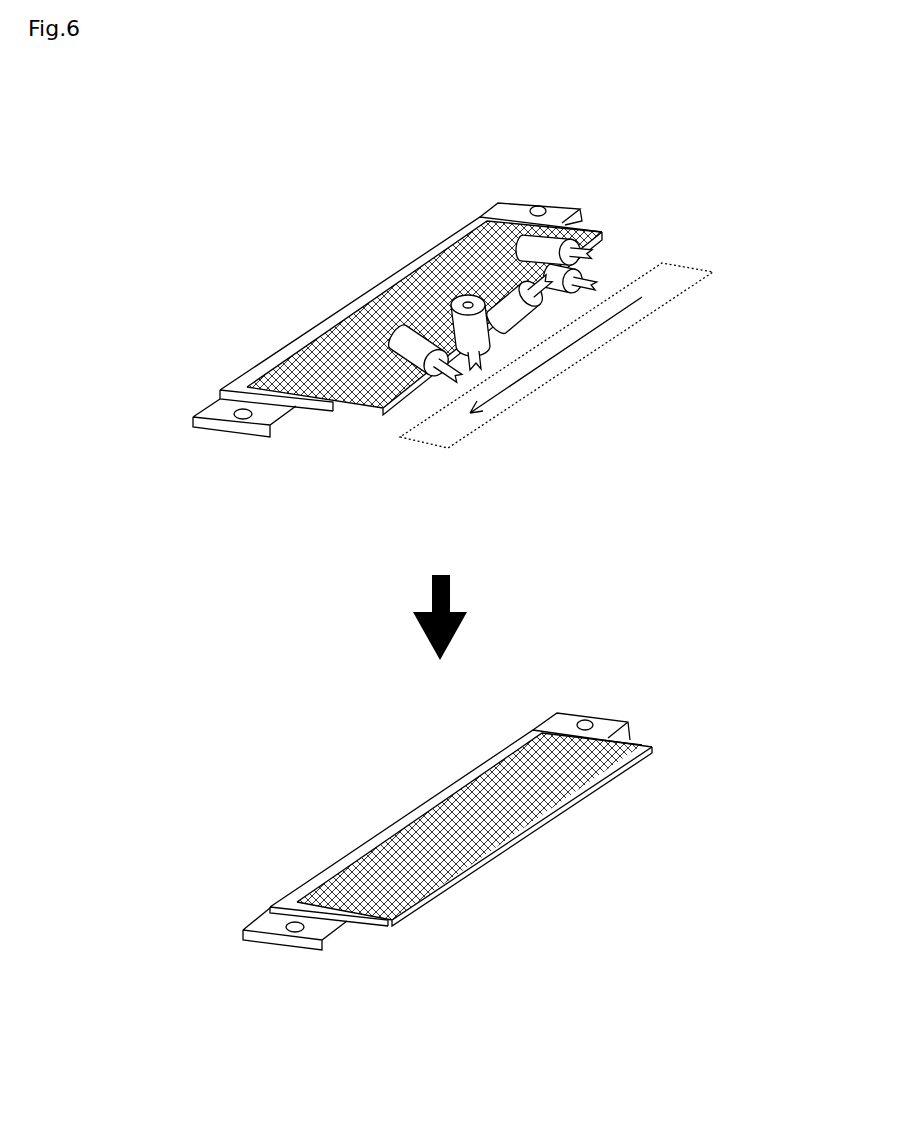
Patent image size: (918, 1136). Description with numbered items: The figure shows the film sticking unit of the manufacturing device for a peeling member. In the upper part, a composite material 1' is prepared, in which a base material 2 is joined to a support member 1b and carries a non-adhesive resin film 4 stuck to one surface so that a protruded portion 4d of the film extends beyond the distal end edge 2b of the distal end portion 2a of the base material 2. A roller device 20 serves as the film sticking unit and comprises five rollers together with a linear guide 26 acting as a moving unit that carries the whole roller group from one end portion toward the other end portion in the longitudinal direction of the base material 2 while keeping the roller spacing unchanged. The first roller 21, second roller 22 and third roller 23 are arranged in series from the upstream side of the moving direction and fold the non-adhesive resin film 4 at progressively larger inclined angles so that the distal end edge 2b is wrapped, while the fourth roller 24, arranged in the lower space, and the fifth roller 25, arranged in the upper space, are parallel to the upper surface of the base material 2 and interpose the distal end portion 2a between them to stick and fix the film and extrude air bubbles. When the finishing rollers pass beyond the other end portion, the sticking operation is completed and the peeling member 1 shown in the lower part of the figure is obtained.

The composite material 1' is at (357, 344).
The peeling member 1 is at (447, 831).
The support member 1b is at (218, 408).
The base material 2 is at (411, 344).
The distal end portion 2a is at (318, 410).
The distal end edge 2b is at (342, 405).
The non-adhesive resin film 4 is at (424, 358).
The protruded portion 4d is at (373, 410).
The roller device 20 is at (552, 326).
The first roller 21 is at (435, 380).
The second roller 22 is at (487, 358).
The third roller 23 is at (520, 320).
The fourth roller 24 is at (572, 293).
The fifth roller 25 is at (572, 245).
The linear guide 26 is at (665, 273).